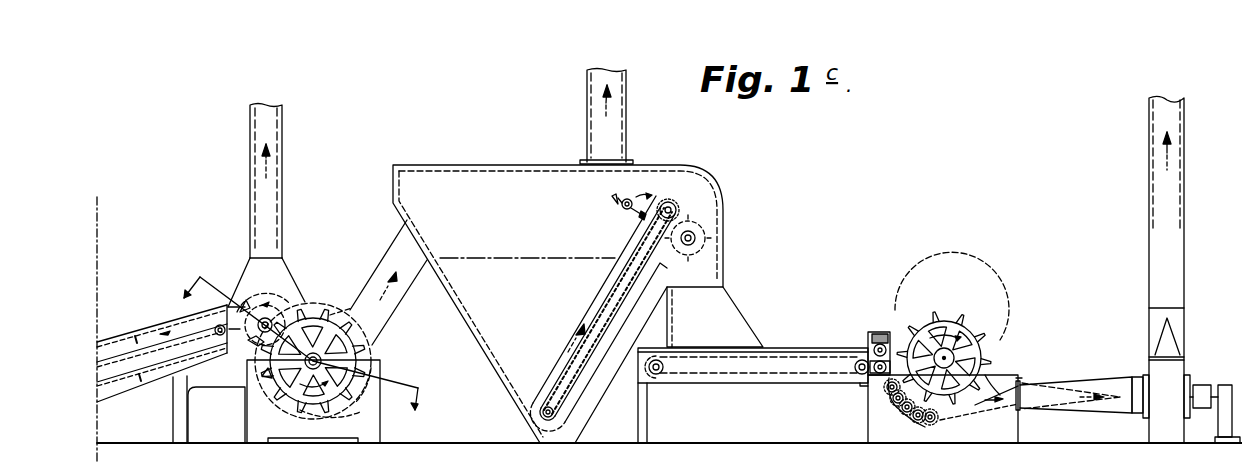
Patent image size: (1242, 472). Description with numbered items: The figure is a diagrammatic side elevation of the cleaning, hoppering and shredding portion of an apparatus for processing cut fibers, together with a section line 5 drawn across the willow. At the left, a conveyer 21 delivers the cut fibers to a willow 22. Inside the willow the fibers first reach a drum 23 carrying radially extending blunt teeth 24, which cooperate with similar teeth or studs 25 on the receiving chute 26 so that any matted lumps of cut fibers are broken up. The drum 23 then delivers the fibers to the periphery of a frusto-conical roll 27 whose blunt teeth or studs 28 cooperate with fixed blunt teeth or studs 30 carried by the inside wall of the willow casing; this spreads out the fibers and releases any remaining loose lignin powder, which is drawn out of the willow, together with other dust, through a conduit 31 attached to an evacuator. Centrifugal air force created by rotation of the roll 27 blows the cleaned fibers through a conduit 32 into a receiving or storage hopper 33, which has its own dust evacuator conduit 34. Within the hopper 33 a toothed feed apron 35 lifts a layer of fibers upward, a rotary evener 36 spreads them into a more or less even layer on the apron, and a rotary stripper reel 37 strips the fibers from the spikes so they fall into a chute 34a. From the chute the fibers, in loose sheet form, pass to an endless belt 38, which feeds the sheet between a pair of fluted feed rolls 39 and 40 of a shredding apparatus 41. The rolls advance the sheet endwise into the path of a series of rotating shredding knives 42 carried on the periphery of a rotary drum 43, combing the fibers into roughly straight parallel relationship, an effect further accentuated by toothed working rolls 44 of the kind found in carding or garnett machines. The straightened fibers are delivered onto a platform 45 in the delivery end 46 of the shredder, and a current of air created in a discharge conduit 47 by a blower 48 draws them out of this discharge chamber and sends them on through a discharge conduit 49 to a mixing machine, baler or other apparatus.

The section line 5- 5 is at (312, 334).
The conveyer 21 is at (118, 352).
The willow 22 is at (313, 357).
The drum 23 is at (264, 316).
The blunt teeth 24 is at (246, 300).
The teeth or studs 25 is at (252, 346).
The receiving chute 26 is at (266, 372).
The frusto-conical roll 27 is at (345, 404).
The blunt teeth or studs 28 is at (368, 332).
The fixed blunt teeth or studs 30 is at (377, 369).
The conduit 31 is at (272, 212).
The conduit 32 is at (403, 248).
The receiving or storage hopper 33 is at (558, 304).
The dust evacuator conduit 34 is at (620, 121).
The chute 34a is at (715, 317).
The toothed feed apron 35 is at (602, 297).
The rotary evener 36 is at (640, 213).
The rotary stripper reel 37 is at (706, 239).
The endless belt 38 is at (790, 352).
The feed roll 39 is at (872, 346).
The feed roll 40 is at (880, 376).
The shredding apparatus 41 is at (944, 336).
The shredding knives 42 is at (903, 342).
The rotary drum 43 is at (992, 345).
The toothed working rolls 44 is at (924, 421).
The platform 45 is at (960, 410).
The delivery end 46 is at (992, 392).
The discharge conduit 47 is at (1065, 400).
The blower 48 is at (1191, 375).
The discharge conduit 49 is at (1161, 268).